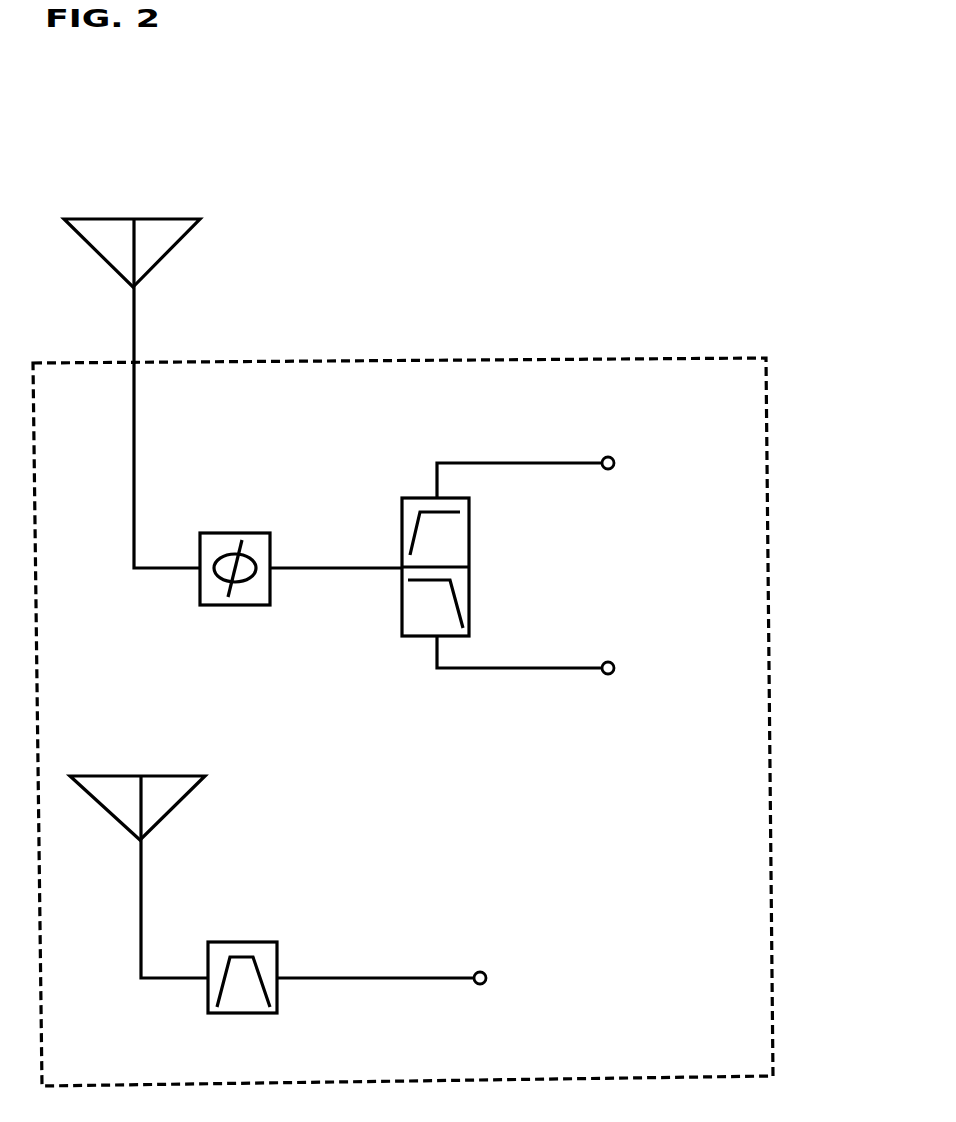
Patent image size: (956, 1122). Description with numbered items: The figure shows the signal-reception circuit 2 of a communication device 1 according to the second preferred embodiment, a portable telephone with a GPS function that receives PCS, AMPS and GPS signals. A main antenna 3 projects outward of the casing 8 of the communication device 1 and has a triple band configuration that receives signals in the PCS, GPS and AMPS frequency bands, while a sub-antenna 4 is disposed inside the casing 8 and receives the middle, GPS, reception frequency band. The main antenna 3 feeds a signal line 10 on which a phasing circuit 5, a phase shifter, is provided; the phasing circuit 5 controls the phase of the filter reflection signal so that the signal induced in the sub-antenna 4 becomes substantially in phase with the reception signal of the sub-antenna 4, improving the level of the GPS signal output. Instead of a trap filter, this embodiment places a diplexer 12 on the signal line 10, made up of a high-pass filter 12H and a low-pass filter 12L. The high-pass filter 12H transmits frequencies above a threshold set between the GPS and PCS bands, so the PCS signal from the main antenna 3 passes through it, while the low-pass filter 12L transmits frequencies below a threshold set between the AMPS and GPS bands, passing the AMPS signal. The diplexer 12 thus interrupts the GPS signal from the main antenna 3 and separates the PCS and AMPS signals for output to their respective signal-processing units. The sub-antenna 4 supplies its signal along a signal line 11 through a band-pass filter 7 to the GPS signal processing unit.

The communication device 1 is at (553, 107).
The signal-reception circuit 2 is at (310, 297).
The main antenna 3 is at (150, 228).
The sub-antenna 4 is at (160, 786).
The phasing circuit 5 is at (240, 533).
The band-pass filter 7 is at (245, 942).
The casing 8 is at (545, 358).
The signal line 10 is at (134, 447).
The signal line 11 is at (141, 905).
The diplexer 12 is at (409, 513).
The high-pass filter 12H is at (462, 537).
The low-pass filter 12L is at (462, 600).